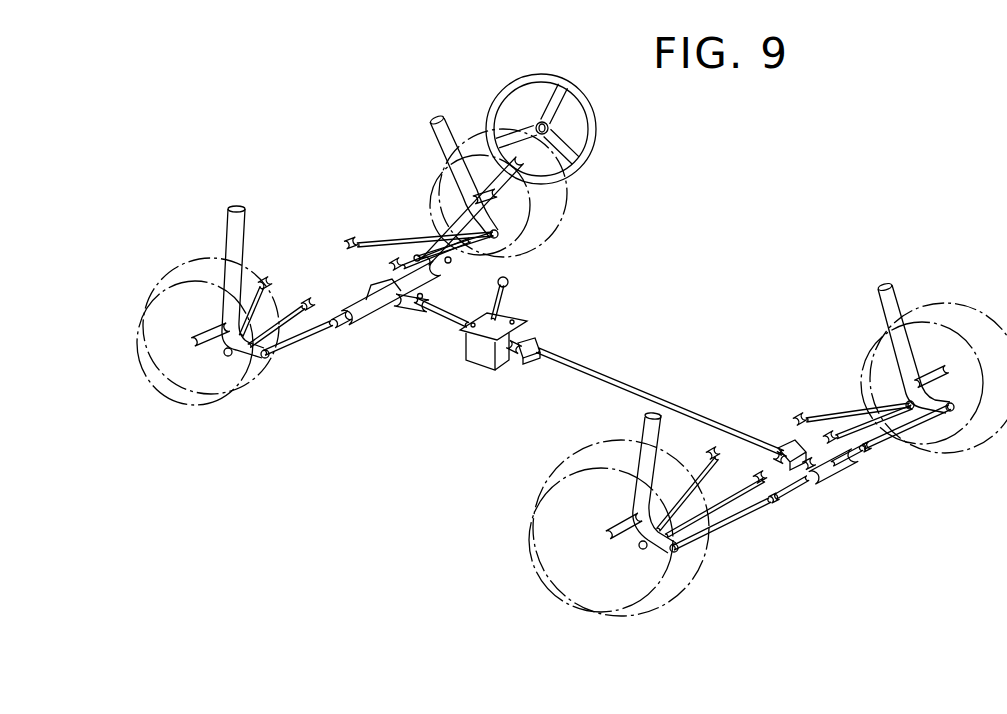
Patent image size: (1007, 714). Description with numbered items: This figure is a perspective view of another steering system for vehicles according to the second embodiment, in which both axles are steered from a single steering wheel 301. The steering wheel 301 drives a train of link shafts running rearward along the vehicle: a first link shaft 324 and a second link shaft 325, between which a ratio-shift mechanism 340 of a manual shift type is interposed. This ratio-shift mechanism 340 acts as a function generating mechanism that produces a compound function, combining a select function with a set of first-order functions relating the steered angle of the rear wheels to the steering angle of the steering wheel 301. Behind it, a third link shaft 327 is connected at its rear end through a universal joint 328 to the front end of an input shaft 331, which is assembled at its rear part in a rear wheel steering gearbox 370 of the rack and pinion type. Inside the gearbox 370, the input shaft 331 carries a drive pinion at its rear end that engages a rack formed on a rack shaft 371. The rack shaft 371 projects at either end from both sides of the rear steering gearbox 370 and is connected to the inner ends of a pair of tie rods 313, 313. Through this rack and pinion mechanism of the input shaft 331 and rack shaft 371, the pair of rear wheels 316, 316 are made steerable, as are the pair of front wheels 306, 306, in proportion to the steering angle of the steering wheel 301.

The steering wheel 301 is at (594, 123).
The front wheels 306 is at (558, 218).
The tie rods 313 is at (913, 437).
The rear wheels 316 is at (967, 413).
The first link shaft 324 is at (440, 316).
The second link shaft 325 is at (513, 357).
The third link shaft 327 is at (609, 381).
The universal joint 328 is at (784, 444).
The input shaft 331 is at (803, 461).
The ratio-shift mechanism 340 is at (528, 314).
The rear wheel steering gearbox 370 is at (818, 478).
The rack shaft 371 is at (797, 500).